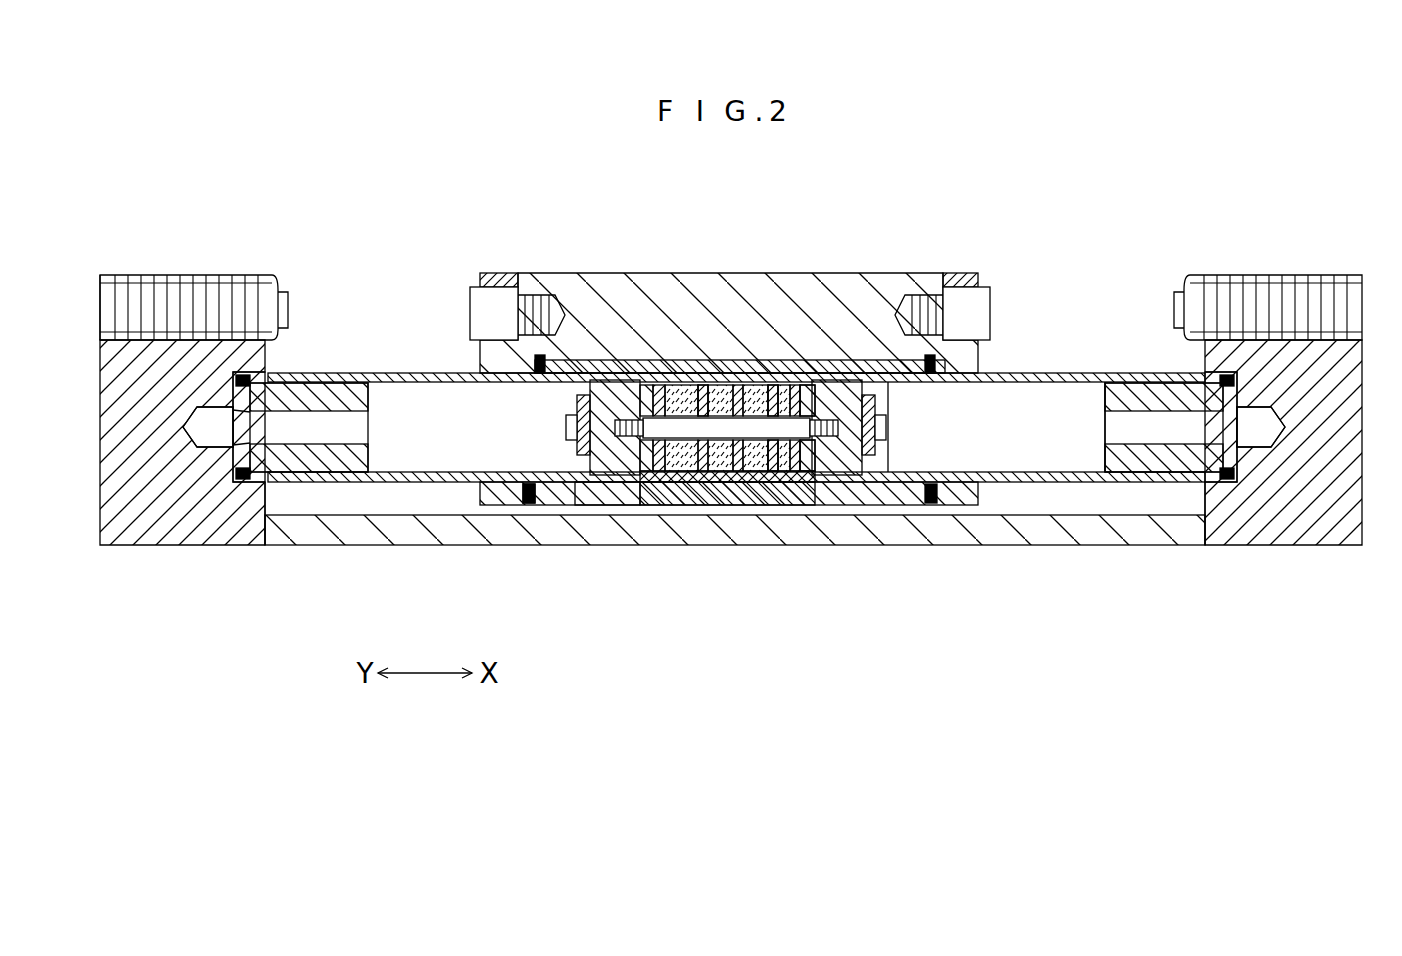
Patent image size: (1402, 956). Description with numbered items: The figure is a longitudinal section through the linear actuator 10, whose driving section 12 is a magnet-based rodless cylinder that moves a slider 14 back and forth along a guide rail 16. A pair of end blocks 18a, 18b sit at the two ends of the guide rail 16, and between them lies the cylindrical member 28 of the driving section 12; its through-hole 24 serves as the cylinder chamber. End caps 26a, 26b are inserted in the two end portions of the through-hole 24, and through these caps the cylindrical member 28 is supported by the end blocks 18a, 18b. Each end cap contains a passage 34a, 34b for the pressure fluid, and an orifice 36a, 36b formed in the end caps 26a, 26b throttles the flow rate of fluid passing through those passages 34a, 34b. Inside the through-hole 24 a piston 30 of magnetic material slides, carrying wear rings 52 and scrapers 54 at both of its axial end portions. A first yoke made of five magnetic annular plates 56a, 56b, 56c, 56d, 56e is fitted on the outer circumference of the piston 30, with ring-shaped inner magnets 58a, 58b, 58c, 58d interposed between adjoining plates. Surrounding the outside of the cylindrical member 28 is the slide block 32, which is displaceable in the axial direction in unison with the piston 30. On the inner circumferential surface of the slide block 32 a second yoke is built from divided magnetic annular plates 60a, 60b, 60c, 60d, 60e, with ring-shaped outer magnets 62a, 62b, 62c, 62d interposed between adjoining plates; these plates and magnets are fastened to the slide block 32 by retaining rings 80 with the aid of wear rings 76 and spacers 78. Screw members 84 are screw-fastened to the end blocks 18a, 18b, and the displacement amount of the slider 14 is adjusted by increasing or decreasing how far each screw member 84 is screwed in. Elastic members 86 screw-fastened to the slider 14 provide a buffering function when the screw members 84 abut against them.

The linear actuator 10 is at (905, 155).
The driving section 12 is at (382, 372).
The slider 14 is at (896, 272).
The guide rail 16 is at (480, 548).
The end block 18a is at (118, 515).
The end block 18b is at (1330, 515).
The through-hole 24 is at (430, 390).
The end cap 26a is at (325, 395).
The end cap 26b is at (1130, 395).
The cylindrical member 28 is at (1040, 385).
The piston 30 is at (800, 425).
The slide block 32 is at (912, 502).
The passage 34a is at (240, 470).
The passage 34b is at (1248, 470).
The orifice 36a is at (232, 440).
The orifice 36b is at (1240, 440).
The wear ring 52 is at (590, 392).
The scraper 54 is at (635, 385).
The annular plate 56a is at (680, 472).
The annular plate 56b is at (718, 472).
The annular plate 56c is at (752, 472).
The annular plate 56d is at (784, 472).
The annular plate 56e is at (820, 480).
The ring-shaped inner magnet 58a is at (662, 385).
The ring-shaped inner magnet 58b is at (706, 385).
The ring-shaped inner magnet 58c is at (760, 385).
The ring-shaped inner magnet 58d is at (786, 385).
The divided annular plate 60a is at (672, 472).
The divided annular plate 60b is at (710, 472).
The divided annular plate 60c is at (745, 472).
The divided annular plate 60d is at (778, 472).
The divided annular plate 60e is at (806, 480).
The ring-shaped outer magnet 62a is at (700, 385).
The ring-shaped outer magnet 62b is at (736, 385).
The ring-shaped outer magnet 62c is at (776, 385).
The ring-shaped outer magnet 62d is at (796, 385).
The wear ring 76 is at (652, 482).
The spacer 78 is at (598, 505).
The retaining ring 80 is at (530, 505).
The screw member 84 is at (178, 300).
The elastic member 86 is at (490, 320).